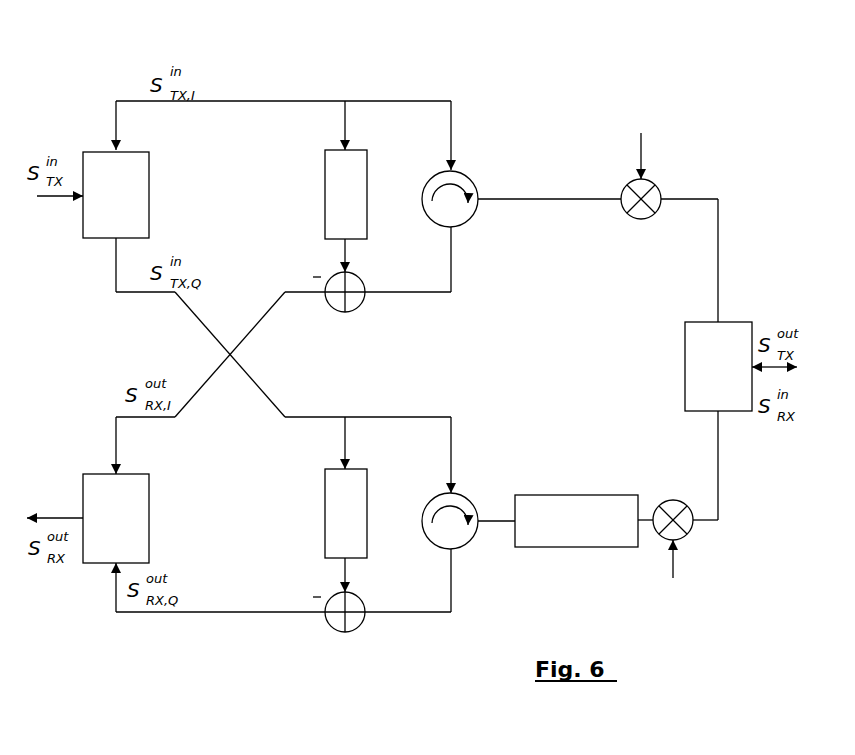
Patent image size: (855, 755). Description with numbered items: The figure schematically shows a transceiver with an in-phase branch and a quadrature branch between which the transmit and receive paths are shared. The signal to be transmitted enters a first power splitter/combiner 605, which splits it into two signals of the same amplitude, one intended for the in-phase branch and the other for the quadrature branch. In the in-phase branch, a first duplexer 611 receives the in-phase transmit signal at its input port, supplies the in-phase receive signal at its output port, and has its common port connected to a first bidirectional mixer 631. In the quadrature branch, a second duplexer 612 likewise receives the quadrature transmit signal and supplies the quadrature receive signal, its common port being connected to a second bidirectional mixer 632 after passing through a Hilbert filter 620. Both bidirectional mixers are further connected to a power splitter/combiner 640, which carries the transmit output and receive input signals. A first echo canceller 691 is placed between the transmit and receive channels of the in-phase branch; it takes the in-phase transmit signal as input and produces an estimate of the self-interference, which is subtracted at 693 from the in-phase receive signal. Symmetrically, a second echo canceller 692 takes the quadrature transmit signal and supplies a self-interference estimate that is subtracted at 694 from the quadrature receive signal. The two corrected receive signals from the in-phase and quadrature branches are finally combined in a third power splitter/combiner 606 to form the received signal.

The first power splitter/combiner 605 is at (83, 239).
The third power splitter/combiner 606 is at (82, 565).
The first duplexer 611 is at (475, 178).
The second duplexer 612 is at (462, 490).
The Hilbert filter 620 is at (565, 494).
The first bidirectional mixer 631 is at (650, 180).
The second bidirectional mixer 632 is at (687, 540).
The power splitter/combiner 640 is at (687, 360).
The first echo canceller 691 is at (327, 152).
The second echo canceller 692 is at (327, 558).
The subtractor 693 is at (345, 313).
The subtractor 694 is at (350, 630).